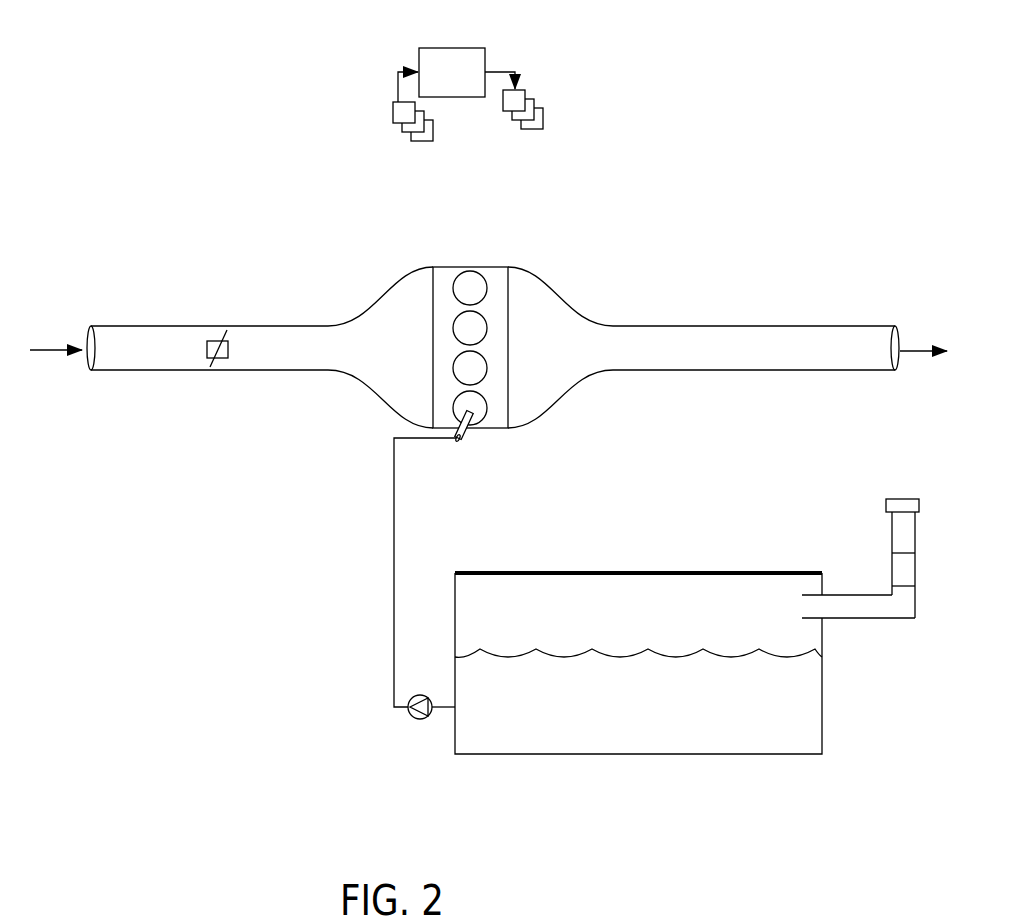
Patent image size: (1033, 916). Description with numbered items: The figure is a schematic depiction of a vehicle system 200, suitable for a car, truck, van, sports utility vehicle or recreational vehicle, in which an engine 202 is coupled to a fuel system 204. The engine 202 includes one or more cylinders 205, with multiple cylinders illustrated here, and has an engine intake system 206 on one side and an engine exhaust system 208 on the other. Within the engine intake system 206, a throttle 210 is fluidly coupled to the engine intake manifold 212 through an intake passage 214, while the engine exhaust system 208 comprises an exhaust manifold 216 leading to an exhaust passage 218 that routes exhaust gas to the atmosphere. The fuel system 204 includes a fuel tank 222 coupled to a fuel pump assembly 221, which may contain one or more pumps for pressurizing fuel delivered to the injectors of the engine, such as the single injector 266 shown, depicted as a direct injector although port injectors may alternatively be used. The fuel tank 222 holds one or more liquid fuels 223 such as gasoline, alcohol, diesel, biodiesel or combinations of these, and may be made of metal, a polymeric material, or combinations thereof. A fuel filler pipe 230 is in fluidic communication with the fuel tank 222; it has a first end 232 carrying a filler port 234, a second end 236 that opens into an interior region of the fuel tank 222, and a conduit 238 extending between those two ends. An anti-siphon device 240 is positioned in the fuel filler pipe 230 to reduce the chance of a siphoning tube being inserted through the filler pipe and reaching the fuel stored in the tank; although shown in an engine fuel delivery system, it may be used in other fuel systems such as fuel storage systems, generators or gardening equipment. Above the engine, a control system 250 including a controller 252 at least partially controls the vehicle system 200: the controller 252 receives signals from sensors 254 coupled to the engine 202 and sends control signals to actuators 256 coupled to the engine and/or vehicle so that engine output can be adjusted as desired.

The vehicle system 200 is at (103, 275).
The engine 202 is at (440, 267).
The fuel system 204 is at (435, 782).
The cylinders 205 is at (487, 327).
The engine intake system 206 is at (270, 255).
The engine exhaust system 208 is at (705, 248).
The throttle 210 is at (228, 352).
The engine intake manifold 212 is at (377, 356).
The intake passage 214 is at (245, 370).
The exhaust manifold 216 is at (549, 356).
The exhaust passage 218 is at (830, 371).
The fuel pump assembly 221 is at (412, 729).
The fuel tank 222 is at (823, 697).
The liquid fuels 223 is at (614, 719).
The fuel filler pipe 230 is at (921, 623).
The first end 232 is at (920, 486).
The filler port 234 is at (897, 499).
The second end 236 is at (797, 600).
The conduit 238 is at (898, 620).
The anti-siphon device 240 is at (891, 572).
The control system 250 is at (378, 40).
The controller 252 is at (437, 84).
The sensors 254 is at (383, 142).
The actuators 256 is at (493, 130).
The injector 266 is at (467, 433).